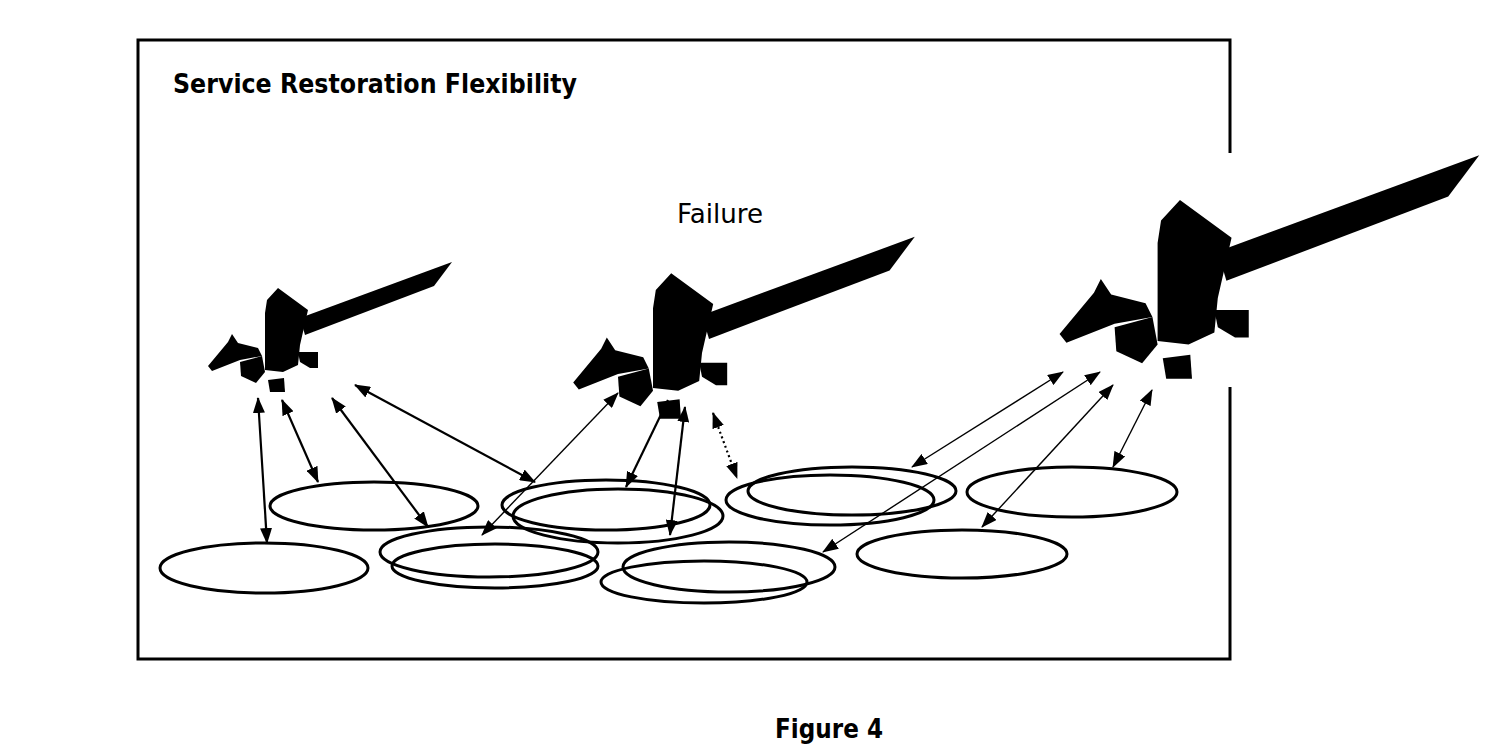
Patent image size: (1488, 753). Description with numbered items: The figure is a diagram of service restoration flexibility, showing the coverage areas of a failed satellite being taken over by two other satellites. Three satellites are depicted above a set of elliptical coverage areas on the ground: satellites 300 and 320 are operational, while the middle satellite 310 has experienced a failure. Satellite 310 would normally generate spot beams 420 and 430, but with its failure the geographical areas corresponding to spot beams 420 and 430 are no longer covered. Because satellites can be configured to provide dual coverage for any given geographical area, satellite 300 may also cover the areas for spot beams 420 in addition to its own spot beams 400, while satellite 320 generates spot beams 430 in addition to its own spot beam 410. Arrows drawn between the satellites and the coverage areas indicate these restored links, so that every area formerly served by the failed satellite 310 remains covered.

The satellite 300 is at (250, 308).
The satellite 310 is at (633, 305).
The satellite 320 is at (1270, 267).
The spot beams 400 is at (417, 483).
The spot beam 410 is at (1137, 512).
The spot beams 420 is at (603, 480).
The spot beams 430 is at (857, 465).